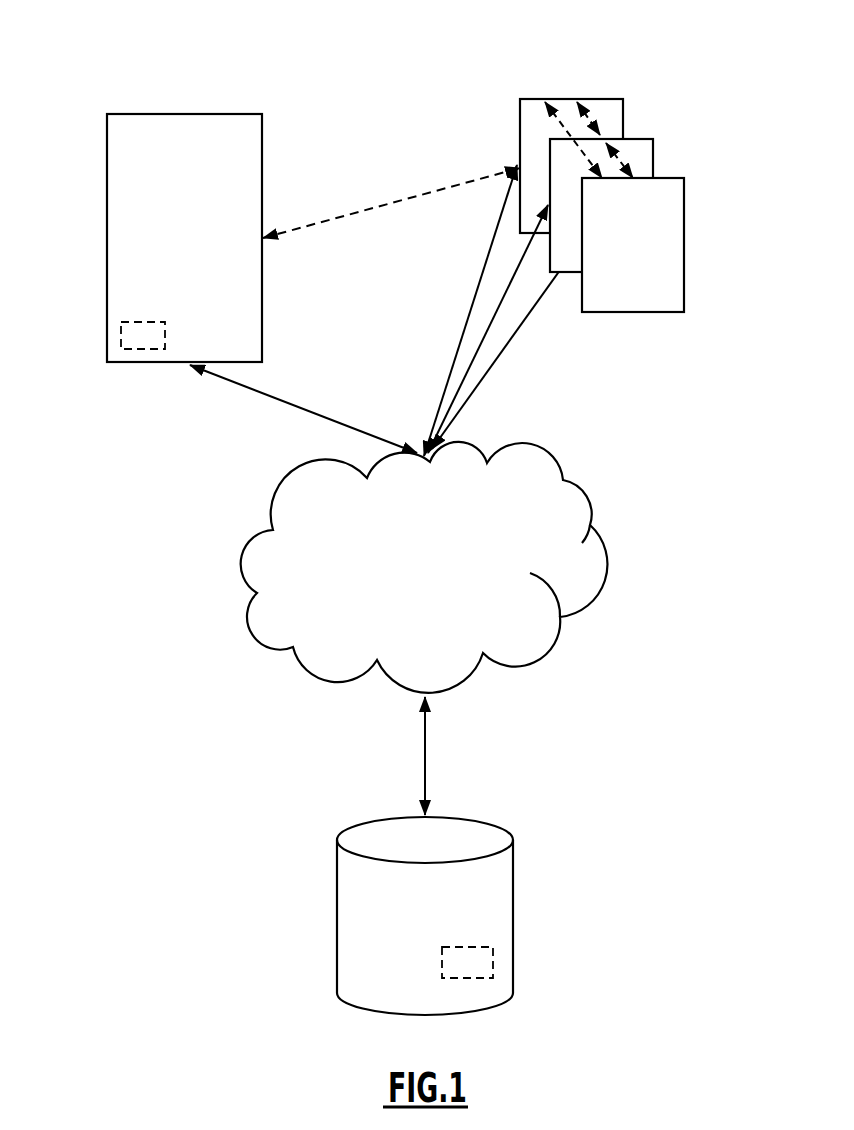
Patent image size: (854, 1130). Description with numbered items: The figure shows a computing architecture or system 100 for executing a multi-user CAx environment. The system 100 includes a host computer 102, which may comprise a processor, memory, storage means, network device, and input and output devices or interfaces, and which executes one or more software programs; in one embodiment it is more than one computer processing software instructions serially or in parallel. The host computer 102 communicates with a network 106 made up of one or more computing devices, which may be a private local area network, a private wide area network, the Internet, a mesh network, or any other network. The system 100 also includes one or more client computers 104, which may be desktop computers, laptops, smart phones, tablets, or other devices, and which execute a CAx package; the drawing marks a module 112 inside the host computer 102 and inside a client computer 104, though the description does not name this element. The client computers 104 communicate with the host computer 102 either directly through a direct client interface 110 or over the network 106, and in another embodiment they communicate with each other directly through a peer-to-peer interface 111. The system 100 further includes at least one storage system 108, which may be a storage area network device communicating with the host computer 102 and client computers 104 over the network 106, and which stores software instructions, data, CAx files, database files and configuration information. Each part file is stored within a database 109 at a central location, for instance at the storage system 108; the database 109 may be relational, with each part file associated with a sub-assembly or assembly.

The system 100 is at (146, 86).
The host computer 102 is at (245, 113).
The client computers 104 is at (658, 178).
The network 106 is at (583, 478).
The storage system 108 is at (500, 823).
The database 109 is at (493, 963).
The direct client interface 110 is at (398, 200).
The peer-to-peer interface 111 is at (585, 120).
The device application module 112 is at (121, 340).